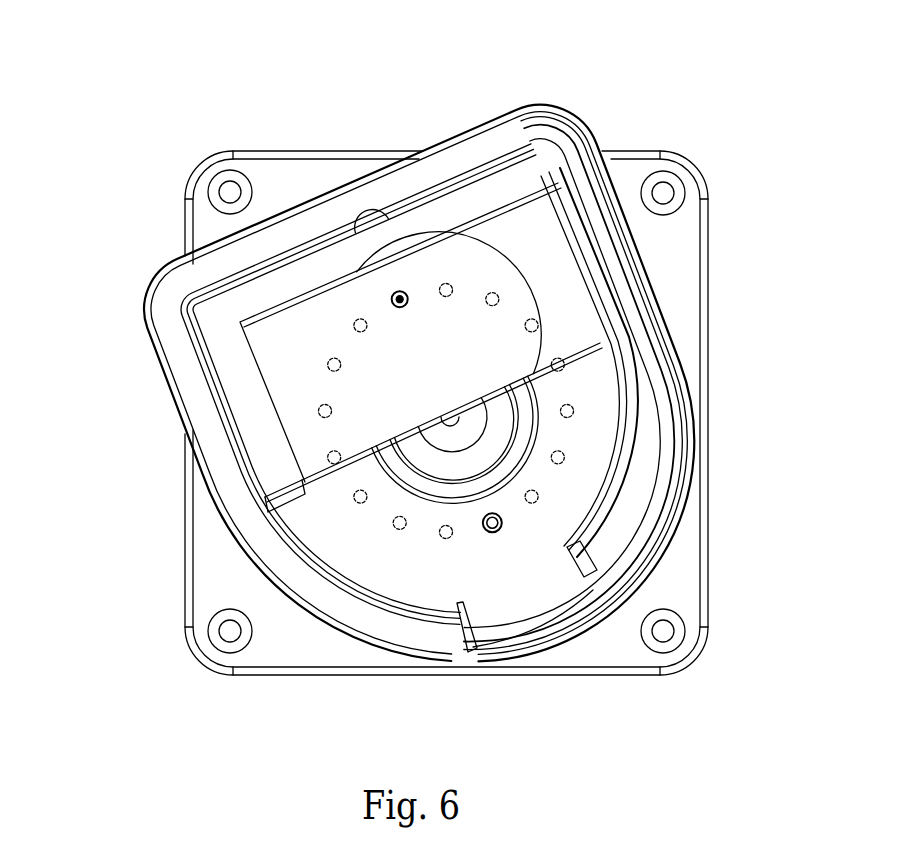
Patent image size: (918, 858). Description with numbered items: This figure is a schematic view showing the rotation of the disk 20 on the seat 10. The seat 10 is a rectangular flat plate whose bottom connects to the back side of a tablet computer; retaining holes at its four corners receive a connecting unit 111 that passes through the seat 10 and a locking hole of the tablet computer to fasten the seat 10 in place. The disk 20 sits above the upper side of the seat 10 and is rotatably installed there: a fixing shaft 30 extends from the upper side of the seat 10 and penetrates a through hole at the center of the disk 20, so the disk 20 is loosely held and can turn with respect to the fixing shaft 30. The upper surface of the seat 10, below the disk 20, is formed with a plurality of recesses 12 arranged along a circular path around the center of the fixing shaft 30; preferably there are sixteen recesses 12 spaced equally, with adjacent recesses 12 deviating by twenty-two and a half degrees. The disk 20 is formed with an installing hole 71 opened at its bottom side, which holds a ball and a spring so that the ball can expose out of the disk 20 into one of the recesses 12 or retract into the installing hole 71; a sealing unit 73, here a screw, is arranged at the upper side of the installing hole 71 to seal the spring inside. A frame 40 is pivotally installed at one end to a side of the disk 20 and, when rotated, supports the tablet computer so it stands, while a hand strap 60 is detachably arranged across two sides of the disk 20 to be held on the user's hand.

The seat 10 is at (298, 150).
The connecting unit 111 is at (214, 183).
The frame 40 is at (485, 148).
The hand strap 60 is at (243, 397).
The fixing shaft 30 is at (503, 422).
The disk 20 is at (508, 575).
The recess 12 is at (564, 457).
The installing hole 71 is at (503, 521).
The sealing unit 73 is at (500, 527).